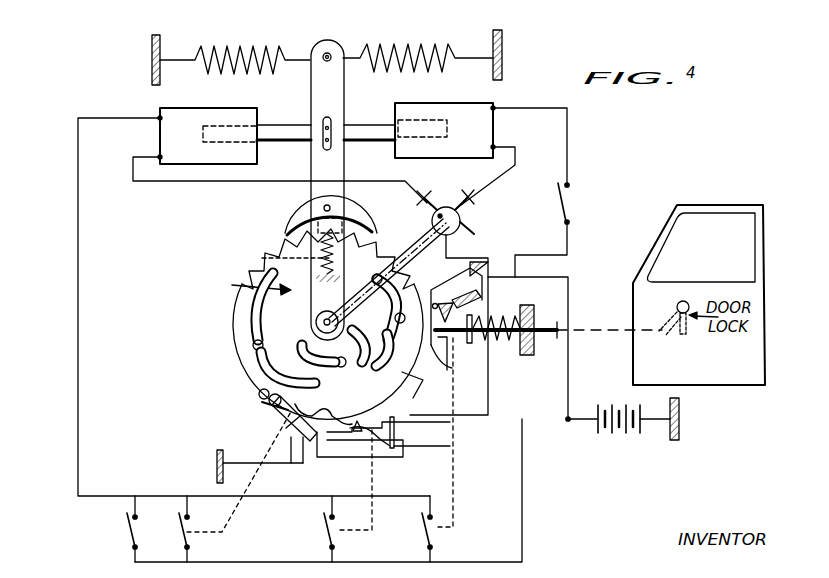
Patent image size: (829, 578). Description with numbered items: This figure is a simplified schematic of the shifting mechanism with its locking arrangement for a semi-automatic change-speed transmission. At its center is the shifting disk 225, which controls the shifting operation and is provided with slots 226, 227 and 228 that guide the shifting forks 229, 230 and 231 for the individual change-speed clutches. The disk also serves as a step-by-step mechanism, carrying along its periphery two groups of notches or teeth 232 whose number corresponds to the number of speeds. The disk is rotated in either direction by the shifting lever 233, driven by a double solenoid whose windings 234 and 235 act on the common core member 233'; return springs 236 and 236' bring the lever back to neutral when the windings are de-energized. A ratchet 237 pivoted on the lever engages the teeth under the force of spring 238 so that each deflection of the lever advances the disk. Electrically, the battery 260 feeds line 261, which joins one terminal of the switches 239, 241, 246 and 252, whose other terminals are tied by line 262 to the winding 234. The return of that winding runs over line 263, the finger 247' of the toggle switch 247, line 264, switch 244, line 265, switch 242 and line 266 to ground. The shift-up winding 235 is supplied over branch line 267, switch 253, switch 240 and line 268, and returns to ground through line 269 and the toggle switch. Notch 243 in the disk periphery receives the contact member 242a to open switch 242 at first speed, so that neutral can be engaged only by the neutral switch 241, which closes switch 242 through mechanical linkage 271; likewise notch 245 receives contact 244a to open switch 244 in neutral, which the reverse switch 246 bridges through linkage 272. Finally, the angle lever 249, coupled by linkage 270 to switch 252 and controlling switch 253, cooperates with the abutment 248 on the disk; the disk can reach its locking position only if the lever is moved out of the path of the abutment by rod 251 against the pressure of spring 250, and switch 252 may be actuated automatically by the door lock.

The shifting disk 225 is at (230, 285).
The slot 226 is at (238, 320).
The slot 227 is at (422, 293).
The slot 228 is at (346, 364).
The shifting fork 229 is at (264, 339).
The shifting fork 230 is at (393, 322).
The shifting fork 231 is at (336, 369).
The notches or teeth 232 is at (280, 238).
The shifting lever 233 is at (347, 190).
The common core member 233' is at (326, 111).
The winding 234 is at (206, 112).
The winding 235 is at (464, 113).
The return spring 236 is at (235, 46).
The return spring 236' is at (418, 42).
The ratchet 237 is at (364, 214).
The spring 238 is at (260, 258).
The switch 239 is at (128, 539).
The switch 240 is at (578, 200).
The neutral switch 241 is at (182, 539).
The switch 242 is at (291, 458).
The contact member 242a is at (272, 404).
The notch 243 is at (262, 392).
The switch 244 is at (396, 430).
The contact 244a is at (394, 446).
The notch 245 is at (322, 410).
The switch 246 is at (320, 538).
The toggle switch 247 is at (389, 272).
The finger 247' is at (480, 212).
The abutment or cam 248 is at (414, 385).
The angle lever 249 is at (436, 360).
The spring 250 is at (504, 340).
The rod or linkage 251 is at (526, 338).
The switch 252 is at (423, 533).
The switch 253 is at (479, 270).
The battery 260 is at (624, 432).
The line 261 is at (464, 551).
The line 262 is at (79, 329).
The line 263 is at (208, 184).
The line 264 is at (491, 408).
The line 265 is at (345, 458).
The line 266 is at (240, 462).
The branch line 267 is at (572, 342).
The line 268 is at (545, 108).
The line 269 is at (512, 176).
The linkage 270 is at (454, 462).
The mechanical linkage 271 is at (240, 512).
The mechanical linkage 272 is at (396, 464).